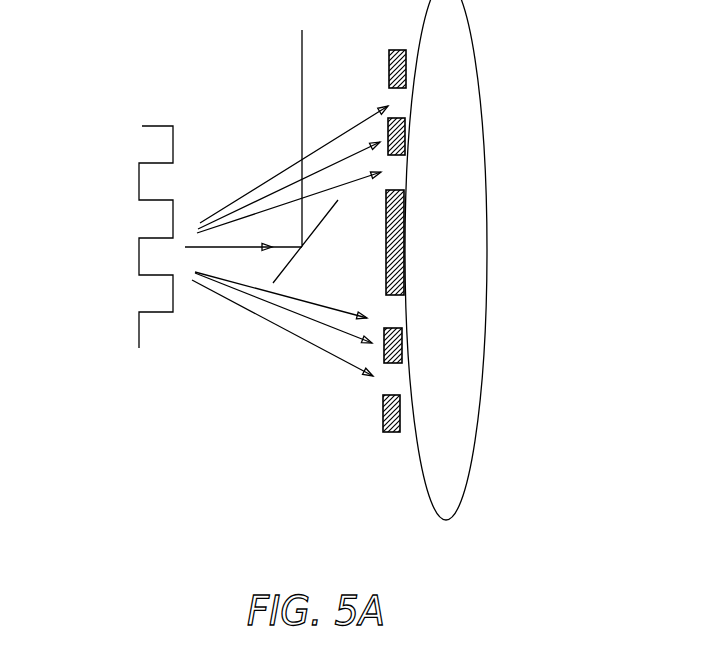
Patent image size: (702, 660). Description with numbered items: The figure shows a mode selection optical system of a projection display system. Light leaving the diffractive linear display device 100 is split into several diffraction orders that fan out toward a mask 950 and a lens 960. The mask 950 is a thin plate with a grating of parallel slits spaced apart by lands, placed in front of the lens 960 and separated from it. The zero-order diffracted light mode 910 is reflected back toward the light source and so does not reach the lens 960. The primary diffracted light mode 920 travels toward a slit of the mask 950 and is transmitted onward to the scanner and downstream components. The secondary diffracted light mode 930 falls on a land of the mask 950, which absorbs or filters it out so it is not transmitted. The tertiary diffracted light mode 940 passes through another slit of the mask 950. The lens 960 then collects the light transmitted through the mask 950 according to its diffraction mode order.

The diffractive linear display device 100 is at (138, 330).
The zero-order diffracted light mode 910 is at (222, 247).
The primary diffracted light mode 920 is at (295, 299).
The secondary diffracted light mode 930 is at (325, 324).
The tertiary diffracted light mode 940 is at (353, 366).
The mask 950 is at (390, 432).
The lens 960 is at (475, 272).